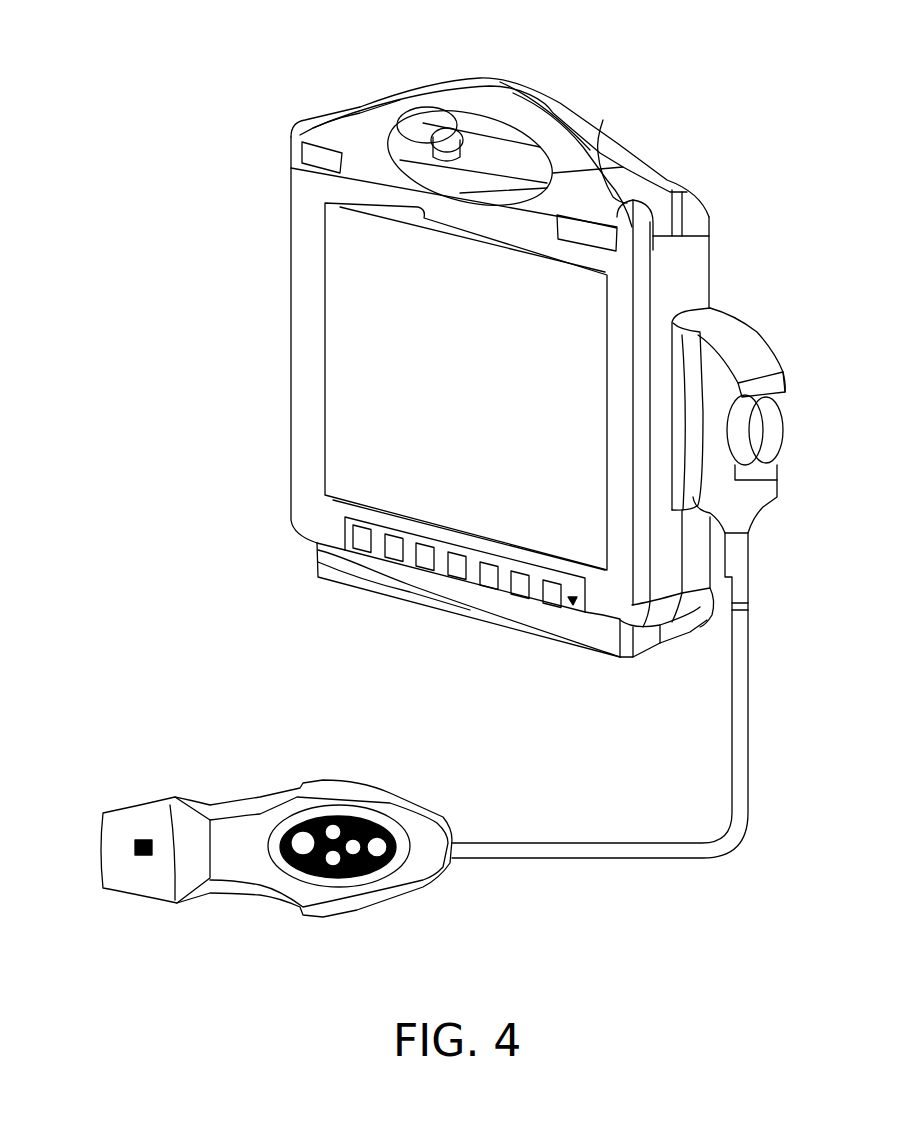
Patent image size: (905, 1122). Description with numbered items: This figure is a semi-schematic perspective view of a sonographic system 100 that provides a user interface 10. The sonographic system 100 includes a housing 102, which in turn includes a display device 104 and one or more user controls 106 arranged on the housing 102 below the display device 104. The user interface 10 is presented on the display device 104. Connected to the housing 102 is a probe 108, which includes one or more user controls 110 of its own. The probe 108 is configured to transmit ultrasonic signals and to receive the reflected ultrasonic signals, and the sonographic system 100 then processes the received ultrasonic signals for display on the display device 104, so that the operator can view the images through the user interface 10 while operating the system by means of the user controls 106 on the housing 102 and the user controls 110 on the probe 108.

The sonographic system 100 is at (163, 90).
The housing 102 is at (617, 143).
The display device 104 is at (327, 193).
The user interface 10 is at (378, 304).
The user controls 106 is at (575, 607).
The probe 108 is at (160, 797).
The user controls 110 is at (390, 813).